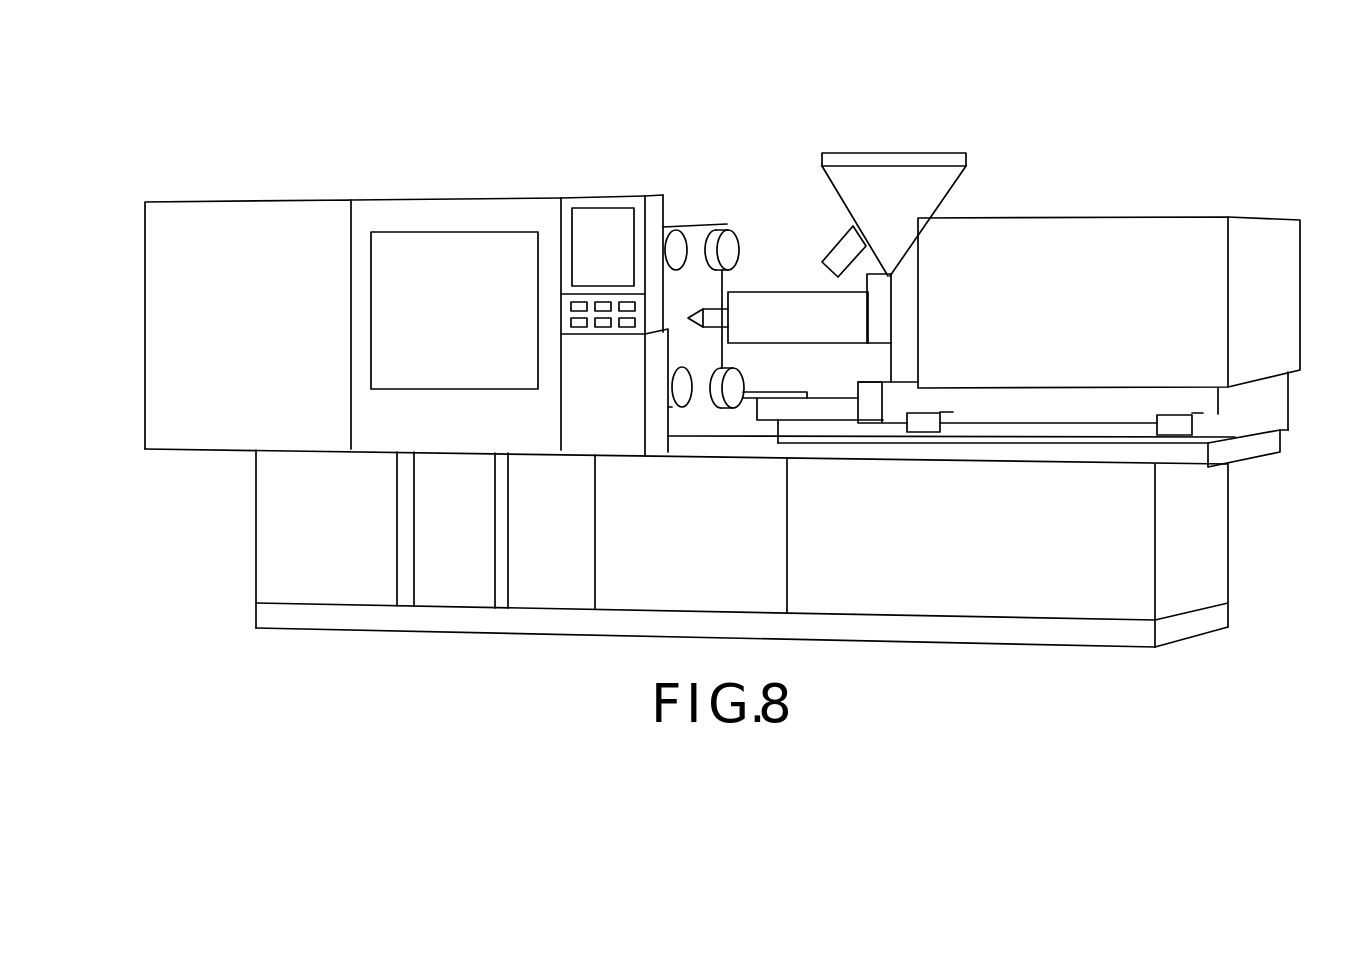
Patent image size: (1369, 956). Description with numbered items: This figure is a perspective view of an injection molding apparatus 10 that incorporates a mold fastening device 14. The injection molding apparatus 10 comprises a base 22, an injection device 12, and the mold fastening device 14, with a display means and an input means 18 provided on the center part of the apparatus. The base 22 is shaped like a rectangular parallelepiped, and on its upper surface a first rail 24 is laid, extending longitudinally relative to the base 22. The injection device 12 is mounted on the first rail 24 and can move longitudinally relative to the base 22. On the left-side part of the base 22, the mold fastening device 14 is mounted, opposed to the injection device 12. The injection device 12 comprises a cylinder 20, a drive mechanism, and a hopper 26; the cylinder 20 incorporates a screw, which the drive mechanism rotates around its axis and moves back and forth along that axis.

The injection molding apparatus 10 is at (753, 116).
The injection device 12 is at (1103, 142).
The mold fastening device 14 is at (467, 144).
The input means 18 is at (622, 300).
The cylinder 20 is at (791, 298).
The base 22 is at (1215, 555).
The first rail 24 is at (1015, 425).
The hopper 26 is at (893, 175).